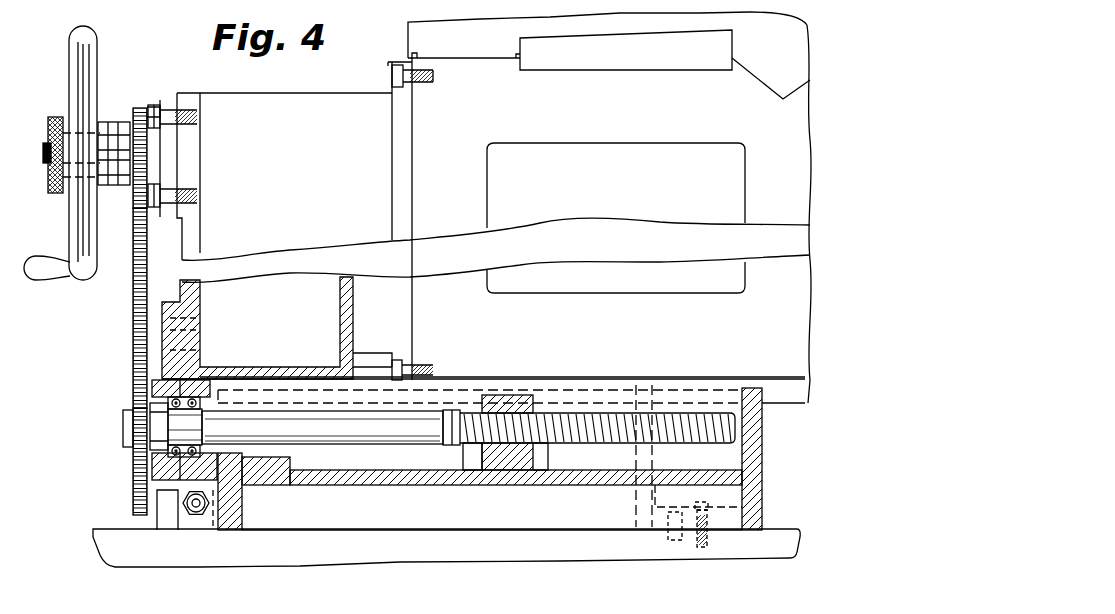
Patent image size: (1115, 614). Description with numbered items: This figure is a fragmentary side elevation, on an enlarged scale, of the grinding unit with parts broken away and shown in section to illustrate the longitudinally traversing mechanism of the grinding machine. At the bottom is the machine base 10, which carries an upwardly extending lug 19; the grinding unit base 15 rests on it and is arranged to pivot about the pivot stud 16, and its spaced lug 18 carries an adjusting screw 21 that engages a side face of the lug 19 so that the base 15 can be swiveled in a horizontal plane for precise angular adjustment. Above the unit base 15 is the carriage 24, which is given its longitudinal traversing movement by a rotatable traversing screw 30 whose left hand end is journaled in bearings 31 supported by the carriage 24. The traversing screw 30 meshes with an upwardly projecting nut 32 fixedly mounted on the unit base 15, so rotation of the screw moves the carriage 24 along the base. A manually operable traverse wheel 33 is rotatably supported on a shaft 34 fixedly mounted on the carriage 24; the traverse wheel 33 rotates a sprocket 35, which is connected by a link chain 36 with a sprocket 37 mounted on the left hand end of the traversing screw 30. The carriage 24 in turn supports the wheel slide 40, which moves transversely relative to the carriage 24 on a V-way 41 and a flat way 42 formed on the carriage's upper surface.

The machine base 10 is at (387, 550).
The grinding unit base 15 is at (757, 487).
The pivot stud 16 is at (725, 523).
The lug 18 is at (195, 520).
The lug 19 is at (160, 522).
The adjusting screw 21 is at (200, 512).
The carriage 24 is at (390, 108).
The traversing screw 30 is at (592, 445).
The bearings 31 is at (173, 473).
The nut 32 is at (510, 447).
The traverse wheel 33 is at (72, 52).
The shaft 34 is at (122, 147).
The sprocket 35 is at (140, 112).
The link chain 36 is at (133, 305).
The sprocket 37 is at (135, 488).
The wheel slide 40 is at (418, 33).
The V-way 41 is at (740, 68).
The flat way 42 is at (460, 60).